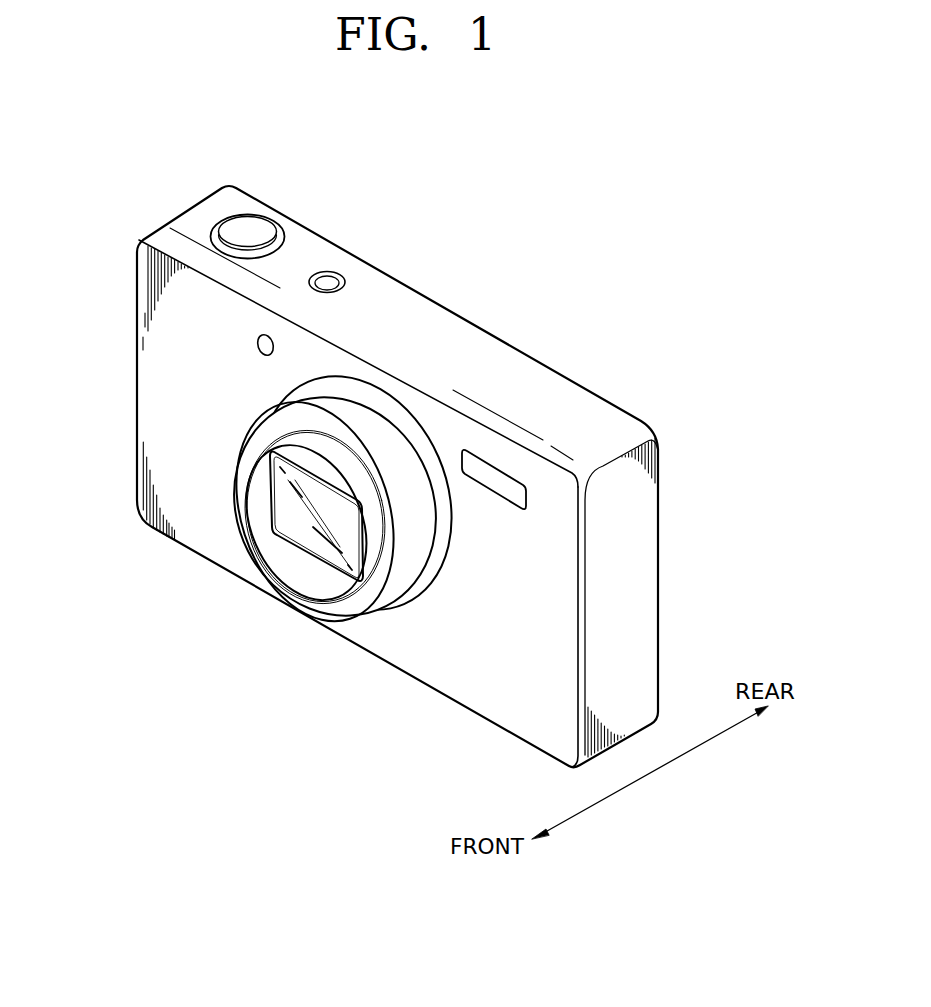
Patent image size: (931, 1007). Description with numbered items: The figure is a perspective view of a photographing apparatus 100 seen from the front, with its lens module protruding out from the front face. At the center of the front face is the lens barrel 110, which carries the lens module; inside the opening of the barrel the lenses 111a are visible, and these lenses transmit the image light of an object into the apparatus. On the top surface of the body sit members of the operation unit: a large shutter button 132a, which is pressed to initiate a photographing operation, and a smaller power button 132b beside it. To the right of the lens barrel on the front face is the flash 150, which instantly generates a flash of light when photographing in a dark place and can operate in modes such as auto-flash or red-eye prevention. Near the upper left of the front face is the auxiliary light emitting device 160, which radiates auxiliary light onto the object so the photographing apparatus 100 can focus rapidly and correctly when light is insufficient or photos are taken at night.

The photographing apparatus 100 is at (647, 373).
The lens barrel 110 is at (342, 543).
The lenses 111a is at (316, 548).
The shutter button 132a is at (253, 228).
The power button 132b is at (328, 280).
The flash 150 is at (497, 477).
The auxiliary light emitting device 160 is at (258, 343).